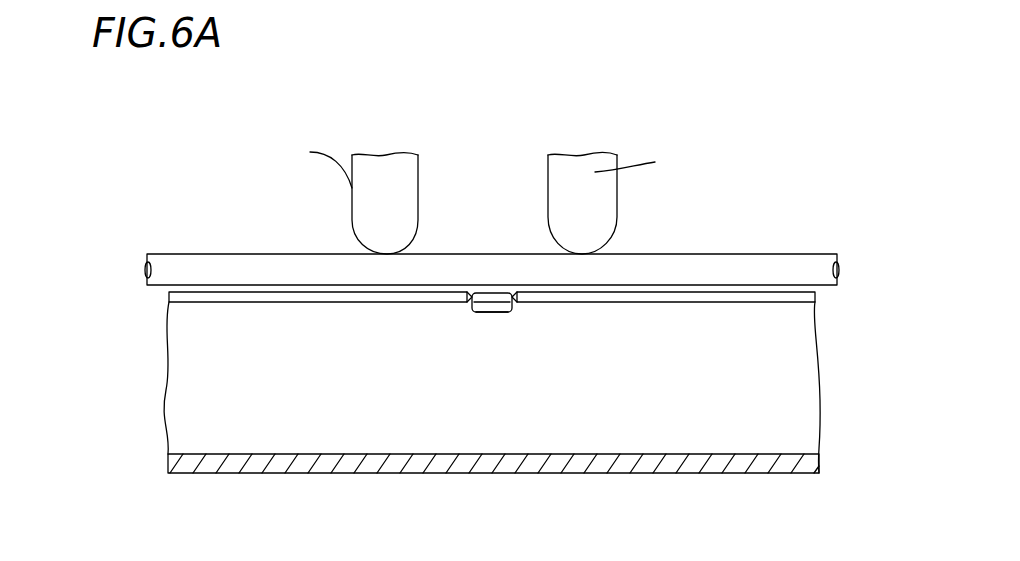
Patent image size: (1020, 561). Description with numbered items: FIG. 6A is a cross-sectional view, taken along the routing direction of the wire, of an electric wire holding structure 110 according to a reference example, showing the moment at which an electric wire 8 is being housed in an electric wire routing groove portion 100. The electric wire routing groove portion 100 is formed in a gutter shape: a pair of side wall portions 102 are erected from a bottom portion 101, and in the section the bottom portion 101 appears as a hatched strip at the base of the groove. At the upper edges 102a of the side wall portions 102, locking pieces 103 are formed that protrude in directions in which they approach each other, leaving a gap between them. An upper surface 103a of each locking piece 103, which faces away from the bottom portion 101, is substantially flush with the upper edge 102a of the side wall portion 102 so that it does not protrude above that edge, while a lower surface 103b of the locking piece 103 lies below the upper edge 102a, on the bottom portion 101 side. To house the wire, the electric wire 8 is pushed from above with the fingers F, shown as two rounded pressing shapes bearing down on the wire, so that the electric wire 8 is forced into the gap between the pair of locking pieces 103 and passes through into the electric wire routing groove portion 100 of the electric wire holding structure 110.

The electric wire 8 is at (797, 253).
The electric wire routing groove portion 100 is at (535, 350).
The bottom portion 101 is at (790, 454).
The side wall portion 102 is at (795, 352).
The upper edge 102a is at (270, 292).
The locking piece 103 is at (478, 350).
The upper surface 103a is at (485, 293).
The lower surface 103b is at (495, 312).
The electric wire holding structure 110 is at (523, 156).